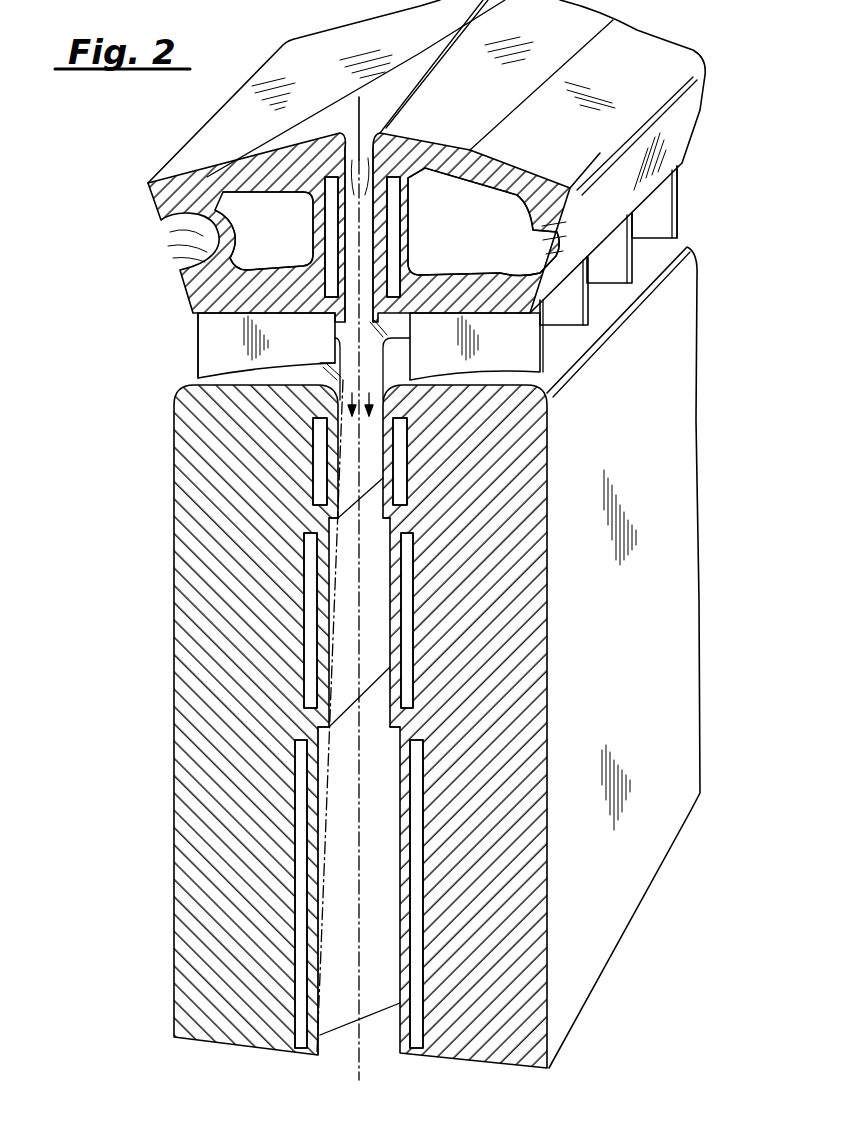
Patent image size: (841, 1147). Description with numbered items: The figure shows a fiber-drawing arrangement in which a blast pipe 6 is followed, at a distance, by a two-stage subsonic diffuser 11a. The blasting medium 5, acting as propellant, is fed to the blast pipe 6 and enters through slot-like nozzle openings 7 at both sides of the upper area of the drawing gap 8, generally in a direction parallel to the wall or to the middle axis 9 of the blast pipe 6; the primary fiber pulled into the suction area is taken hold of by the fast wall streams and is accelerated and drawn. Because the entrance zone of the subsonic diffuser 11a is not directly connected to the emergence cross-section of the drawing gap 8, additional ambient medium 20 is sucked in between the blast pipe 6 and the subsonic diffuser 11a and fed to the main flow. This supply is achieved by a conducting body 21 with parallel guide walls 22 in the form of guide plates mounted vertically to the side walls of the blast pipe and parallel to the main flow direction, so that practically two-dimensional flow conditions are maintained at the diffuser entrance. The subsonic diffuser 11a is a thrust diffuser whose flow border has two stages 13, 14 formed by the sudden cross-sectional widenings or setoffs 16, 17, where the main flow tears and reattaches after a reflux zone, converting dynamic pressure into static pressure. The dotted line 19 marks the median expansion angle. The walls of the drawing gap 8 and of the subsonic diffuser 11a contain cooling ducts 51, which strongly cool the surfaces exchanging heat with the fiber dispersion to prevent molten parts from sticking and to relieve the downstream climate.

The blasting medium 5 is at (213, 237).
The blast pipe 6 is at (152, 205).
The slot-like nozzle openings 7 is at (372, 158).
The drawing gap 8 is at (368, 200).
The middle axis of the blast pipe 9 is at (378, 108).
The two-stage subsonic diffuser 11a is at (170, 600).
The first stage of the subsonic diffuser 13 is at (371, 622).
The second stage of the subsonic diffuser 14 is at (345, 926).
The setoff 16 is at (335, 532).
The setoff 17 is at (323, 733).
The dotted line of median expansion angle 19 is at (320, 1000).
The additional ambient medium 20 is at (190, 337).
The conducting body 21 is at (192, 325).
The guide walls 22 is at (212, 340).
The cooling ducts 51 is at (330, 228).